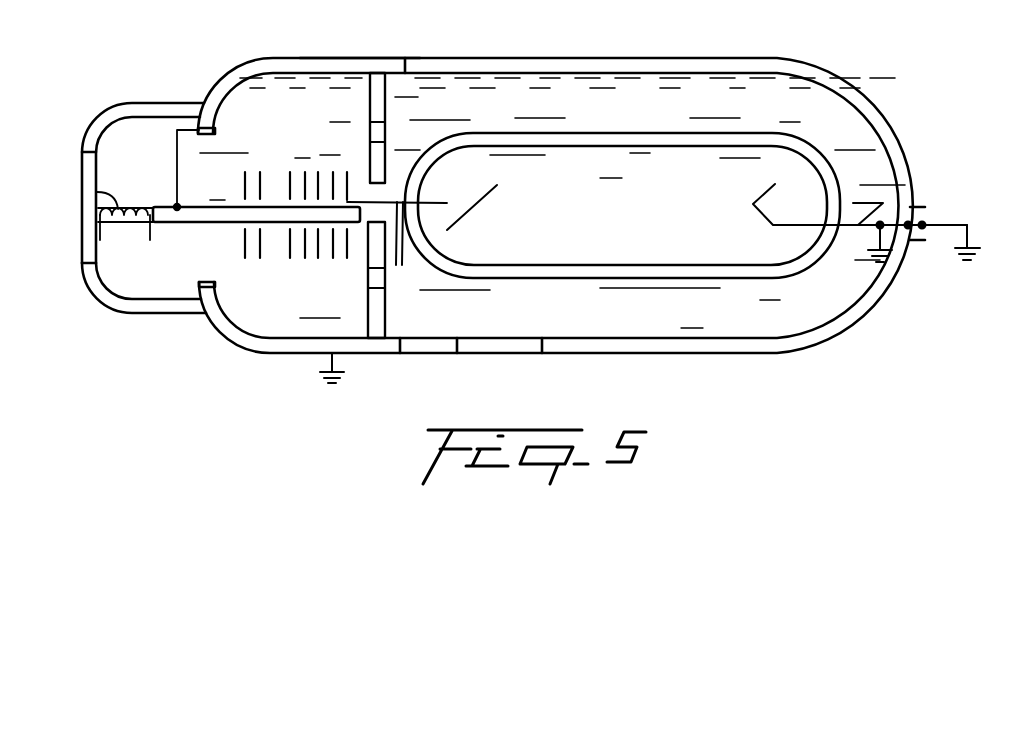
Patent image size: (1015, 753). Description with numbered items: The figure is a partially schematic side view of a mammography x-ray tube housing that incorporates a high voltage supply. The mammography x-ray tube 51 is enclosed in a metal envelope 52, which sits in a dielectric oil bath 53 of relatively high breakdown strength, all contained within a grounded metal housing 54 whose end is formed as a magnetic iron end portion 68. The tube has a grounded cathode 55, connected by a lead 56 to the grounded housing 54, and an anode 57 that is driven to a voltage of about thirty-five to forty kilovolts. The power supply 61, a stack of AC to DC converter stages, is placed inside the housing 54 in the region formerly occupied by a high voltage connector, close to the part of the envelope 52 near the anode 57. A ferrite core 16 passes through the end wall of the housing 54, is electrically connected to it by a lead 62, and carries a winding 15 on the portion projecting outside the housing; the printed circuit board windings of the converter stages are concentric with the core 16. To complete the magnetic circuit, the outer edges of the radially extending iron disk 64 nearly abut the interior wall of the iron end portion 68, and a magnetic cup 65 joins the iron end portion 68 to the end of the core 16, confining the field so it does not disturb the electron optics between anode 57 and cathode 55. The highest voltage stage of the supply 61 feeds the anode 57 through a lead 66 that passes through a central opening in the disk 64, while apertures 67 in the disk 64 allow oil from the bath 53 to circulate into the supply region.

The winding 15 is at (97, 192).
The ferrite core 16 is at (181, 225).
The mammography x-ray tube 51 is at (600, 177).
The metal envelope 52 is at (822, 157).
The dielectric oil bath 53 is at (681, 327).
The metal housing 54 is at (792, 343).
The grounded cathode 55 is at (774, 185).
The lead 56 is at (862, 222).
The anode 57 is at (492, 195).
The power supply 61 is at (292, 156).
The lead 62 is at (177, 147).
The iron disk 64 is at (387, 102).
The magnetic cup 65 is at (84, 163).
The lead 66 is at (397, 243).
The apertures 67 is at (372, 128).
The iron end portion 68 is at (328, 68).